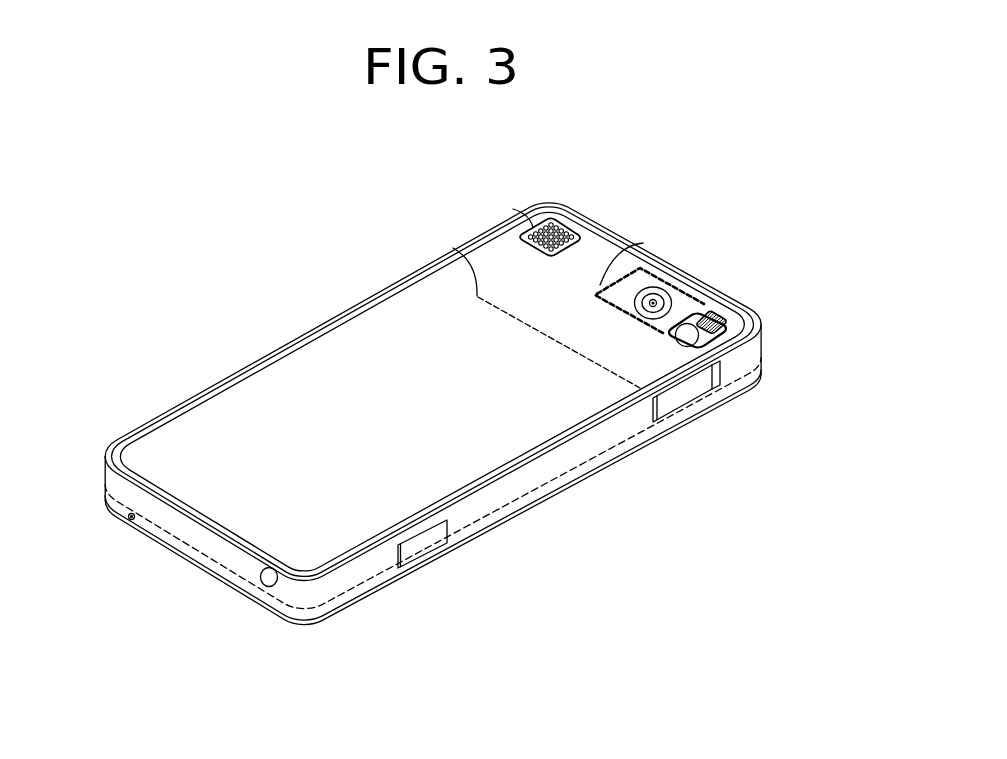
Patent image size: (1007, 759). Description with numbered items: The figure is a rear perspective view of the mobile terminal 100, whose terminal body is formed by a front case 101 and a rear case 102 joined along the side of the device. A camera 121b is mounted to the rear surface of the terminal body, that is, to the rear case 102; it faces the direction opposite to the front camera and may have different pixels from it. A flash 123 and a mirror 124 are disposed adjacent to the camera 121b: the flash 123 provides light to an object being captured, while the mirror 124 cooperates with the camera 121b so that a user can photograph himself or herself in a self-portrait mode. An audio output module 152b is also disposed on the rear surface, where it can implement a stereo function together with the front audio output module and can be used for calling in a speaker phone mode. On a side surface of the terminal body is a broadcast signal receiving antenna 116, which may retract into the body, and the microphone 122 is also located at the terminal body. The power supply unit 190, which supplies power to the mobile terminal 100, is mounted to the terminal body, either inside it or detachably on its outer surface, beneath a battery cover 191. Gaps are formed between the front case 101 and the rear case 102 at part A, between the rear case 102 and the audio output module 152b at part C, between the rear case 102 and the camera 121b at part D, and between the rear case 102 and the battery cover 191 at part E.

The mobile terminal 100 is at (383, 244).
The front case 101 is at (757, 373).
The rear case 102 is at (753, 350).
The broadcast signal receiving antenna 116 is at (268, 578).
The camera 121b is at (653, 303).
The microphone 122 is at (128, 519).
The flash 123 is at (723, 318).
The mirror 124 is at (689, 325).
The audio output module 152b is at (560, 233).
The power supply unit 190 is at (353, 343).
The battery cover 191 is at (248, 400).
The gap between front case and rear case A is at (537, 492).
The gap between rear case and audio output module C is at (522, 222).
The gap between rear case and camera D is at (643, 243).
The gap between rear case and battery cover E is at (478, 297).